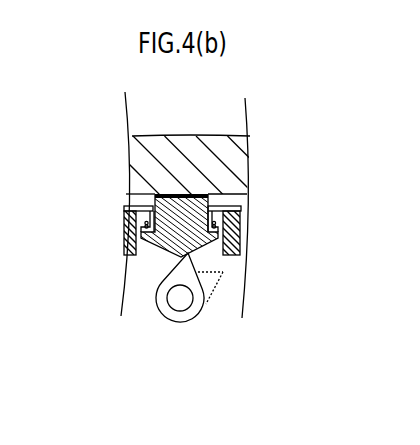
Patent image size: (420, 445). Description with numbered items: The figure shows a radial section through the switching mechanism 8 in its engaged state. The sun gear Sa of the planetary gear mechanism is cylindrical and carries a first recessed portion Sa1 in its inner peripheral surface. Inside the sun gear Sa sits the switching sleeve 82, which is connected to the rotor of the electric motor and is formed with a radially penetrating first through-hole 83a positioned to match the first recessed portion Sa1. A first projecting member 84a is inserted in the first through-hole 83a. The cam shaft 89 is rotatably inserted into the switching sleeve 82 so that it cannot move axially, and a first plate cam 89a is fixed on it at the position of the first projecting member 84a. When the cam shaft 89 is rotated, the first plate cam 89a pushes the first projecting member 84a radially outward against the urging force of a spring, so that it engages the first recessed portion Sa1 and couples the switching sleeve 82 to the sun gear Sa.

The switching mechanism 8 is at (118, 133).
The sun gear Sa is at (168, 135).
The first recessed portion Sa1 is at (212, 203).
The switching sleeve 82 is at (123, 225).
The first through-hole 83a is at (222, 229).
The first projecting member 84a is at (205, 263).
The cam shaft 89 is at (180, 298).
The first plate cam 89a is at (160, 307).